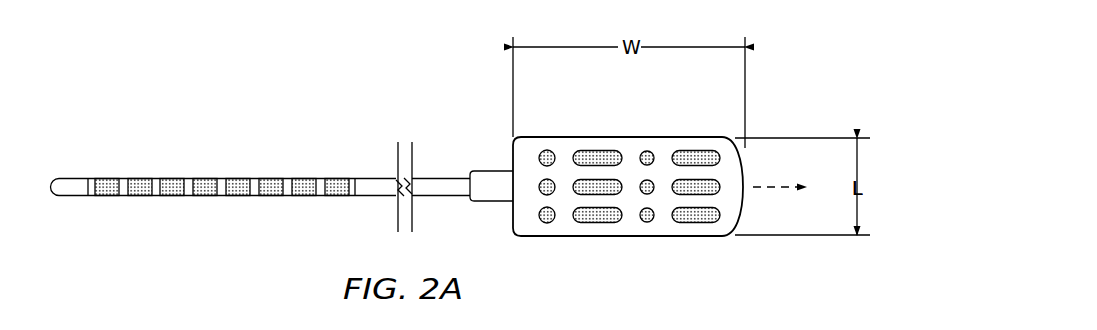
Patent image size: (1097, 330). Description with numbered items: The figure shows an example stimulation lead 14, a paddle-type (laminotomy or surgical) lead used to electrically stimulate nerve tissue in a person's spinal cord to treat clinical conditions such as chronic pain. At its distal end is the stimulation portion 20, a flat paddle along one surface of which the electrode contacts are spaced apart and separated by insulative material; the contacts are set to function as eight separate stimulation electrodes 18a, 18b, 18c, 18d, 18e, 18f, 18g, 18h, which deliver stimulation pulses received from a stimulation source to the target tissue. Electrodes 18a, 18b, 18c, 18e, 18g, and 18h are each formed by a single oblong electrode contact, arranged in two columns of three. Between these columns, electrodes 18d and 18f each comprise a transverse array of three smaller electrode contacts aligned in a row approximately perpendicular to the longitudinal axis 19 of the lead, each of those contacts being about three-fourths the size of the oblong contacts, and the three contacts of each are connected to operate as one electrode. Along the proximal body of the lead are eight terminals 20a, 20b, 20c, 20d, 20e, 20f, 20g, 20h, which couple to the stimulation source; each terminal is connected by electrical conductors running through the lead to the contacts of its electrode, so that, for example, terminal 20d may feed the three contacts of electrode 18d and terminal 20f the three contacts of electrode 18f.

The stimulation lead 14 is at (365, 66).
The longitudinal axis 19 is at (778, 187).
The stimulation portion 20 is at (513, 153).
The terminal 20a is at (107, 178).
The terminal 20b is at (140, 196).
The terminal 20c is at (172, 178).
The terminal 20d is at (204, 196).
The terminal 20e is at (238, 178).
The terminal 20f is at (270, 196).
The terminal 20g is at (304, 178).
The terminal 20h is at (337, 196).
The stimulation electrode 18a is at (708, 222).
The stimulation electrode 18b is at (597, 223).
The stimulation electrode 18c is at (720, 190).
The stimulation electrode 18d is at (654, 160).
The stimulation electrode 18e is at (573, 190).
The stimulation electrode 18f is at (539, 215).
The stimulation electrode 18g is at (698, 150).
The stimulation electrode 18h is at (597, 150).